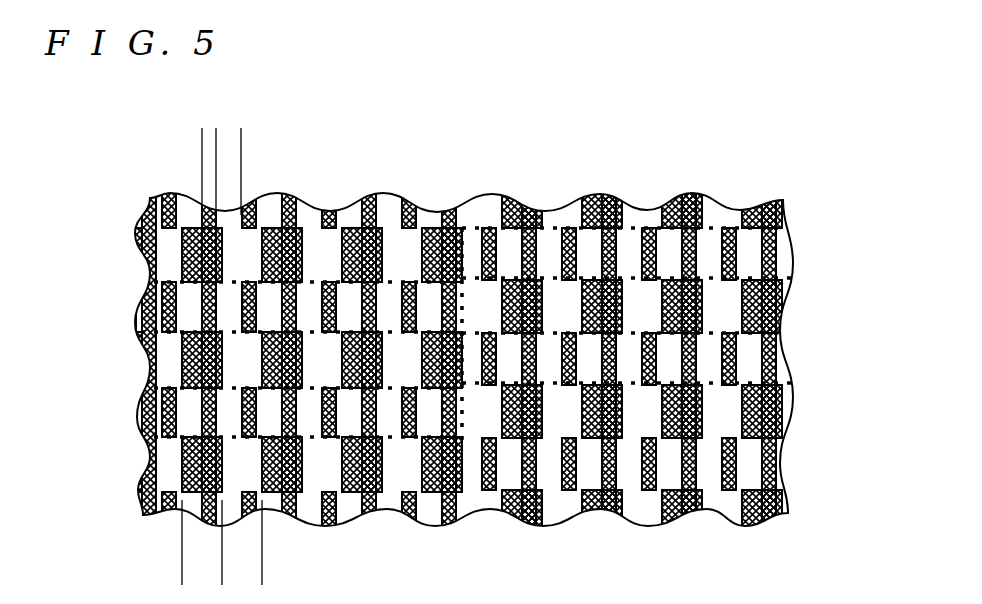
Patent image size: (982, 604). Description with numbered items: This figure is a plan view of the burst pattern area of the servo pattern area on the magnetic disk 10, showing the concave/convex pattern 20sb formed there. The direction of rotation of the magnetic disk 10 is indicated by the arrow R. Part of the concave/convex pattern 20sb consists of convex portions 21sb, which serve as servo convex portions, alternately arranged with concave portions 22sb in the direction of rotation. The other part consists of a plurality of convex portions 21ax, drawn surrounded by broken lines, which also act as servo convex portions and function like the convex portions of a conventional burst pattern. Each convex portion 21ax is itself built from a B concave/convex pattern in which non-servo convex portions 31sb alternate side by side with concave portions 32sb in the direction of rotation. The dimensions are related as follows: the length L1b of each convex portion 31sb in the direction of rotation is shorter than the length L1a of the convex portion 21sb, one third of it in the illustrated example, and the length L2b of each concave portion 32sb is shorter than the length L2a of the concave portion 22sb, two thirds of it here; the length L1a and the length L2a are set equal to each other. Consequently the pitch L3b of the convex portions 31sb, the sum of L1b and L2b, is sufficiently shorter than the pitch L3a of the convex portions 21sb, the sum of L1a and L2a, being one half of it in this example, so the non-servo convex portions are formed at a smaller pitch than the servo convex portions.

The magnetic disk 10 is at (490, 133).
The concave/convex pattern 20sb is at (662, 182).
The convex portions 21ax is at (226, 309).
The convex portions 21sb is at (297, 496).
The concave portions 22sb is at (402, 466).
The convex portions 31sb is at (388, 303).
The concave portions 32sb is at (428, 303).
The length of convex portion 21sb L1a is at (255, 538).
The length of concave portion 22sb L2a is at (287, 558).
The pitch of convex portions 21sb L3a is at (287, 578).
The length of convex portion 31sb L1b is at (255, 176).
The length of concave portion 32sb L2b is at (175, 155).
The pitch of convex portions 31sb L3b is at (282, 137).
The arrow indicating direction of rotation R is at (637, 580).